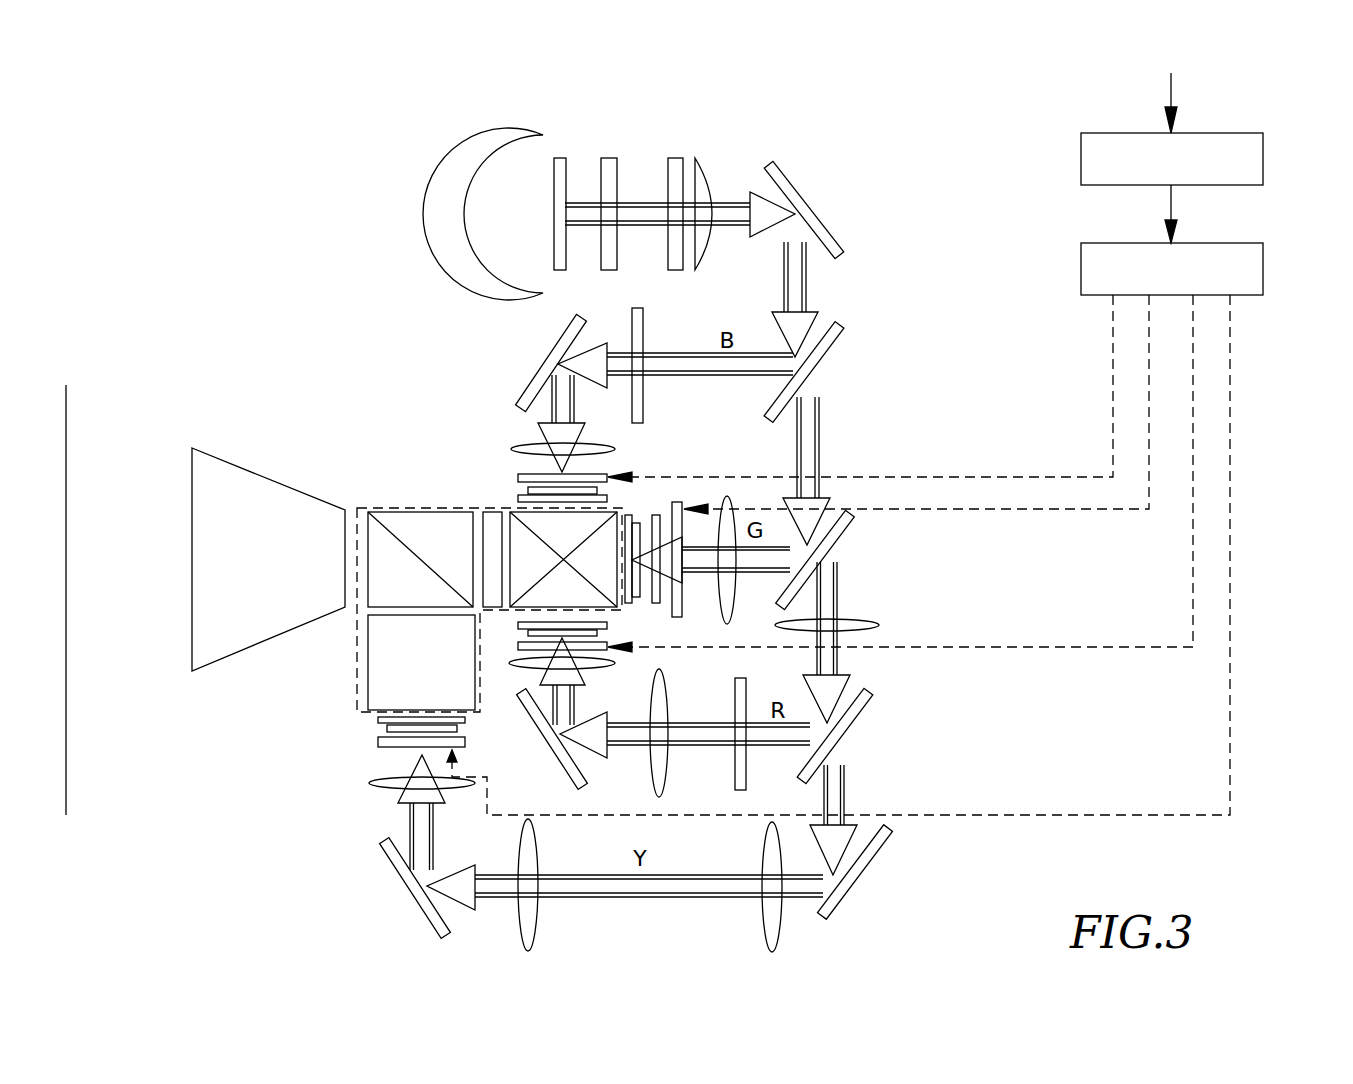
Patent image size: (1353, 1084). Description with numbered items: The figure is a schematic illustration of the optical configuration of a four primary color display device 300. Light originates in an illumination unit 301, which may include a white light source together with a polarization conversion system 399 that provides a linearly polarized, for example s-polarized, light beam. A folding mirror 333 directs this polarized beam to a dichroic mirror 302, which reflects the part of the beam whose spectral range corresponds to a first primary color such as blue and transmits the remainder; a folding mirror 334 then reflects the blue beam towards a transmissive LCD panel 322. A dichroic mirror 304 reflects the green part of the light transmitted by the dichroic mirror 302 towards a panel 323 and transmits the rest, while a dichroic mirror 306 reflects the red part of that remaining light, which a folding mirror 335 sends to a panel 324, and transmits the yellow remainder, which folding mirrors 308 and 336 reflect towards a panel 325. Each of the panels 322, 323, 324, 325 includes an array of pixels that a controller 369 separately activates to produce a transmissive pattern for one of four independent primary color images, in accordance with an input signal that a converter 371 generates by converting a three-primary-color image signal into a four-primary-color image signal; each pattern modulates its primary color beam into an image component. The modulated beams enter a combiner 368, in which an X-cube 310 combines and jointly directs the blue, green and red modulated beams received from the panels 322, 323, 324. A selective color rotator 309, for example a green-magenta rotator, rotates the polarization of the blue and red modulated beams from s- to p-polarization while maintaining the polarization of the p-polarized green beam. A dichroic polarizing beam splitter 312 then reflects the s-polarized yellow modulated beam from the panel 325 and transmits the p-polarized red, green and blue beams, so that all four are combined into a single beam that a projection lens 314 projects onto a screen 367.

The display device 300 is at (1290, 831).
The illumination unit 301 is at (502, 132).
The dichroic mirror 302 is at (820, 360).
The dichroic mirror 304 is at (843, 537).
The dichroic mirror 306 is at (840, 737).
The folding mirror 308 is at (860, 878).
The selective color rotator 309 is at (503, 510).
The X-cube 310 is at (597, 518).
The dichroic polarizing beam splitter 312 is at (397, 590).
The projection lens 314 is at (192, 557).
The transmissive LCD panel 322 is at (518, 498).
The transmissive LCD panel 323 is at (677, 500).
The transmissive LCD panel 324 is at (600, 640).
The transmissive LCD panel 325 is at (467, 720).
The folding mirror 333 is at (810, 203).
The folding mirror 334 is at (552, 360).
The folding mirror 335 is at (587, 770).
The folding mirror 336 is at (408, 893).
The screen 367 is at (66, 444).
The combiner 368 is at (350, 715).
The controller 369 is at (1263, 268).
The converter 371 is at (1263, 157).
The polarization conversion system 399 is at (681, 118).